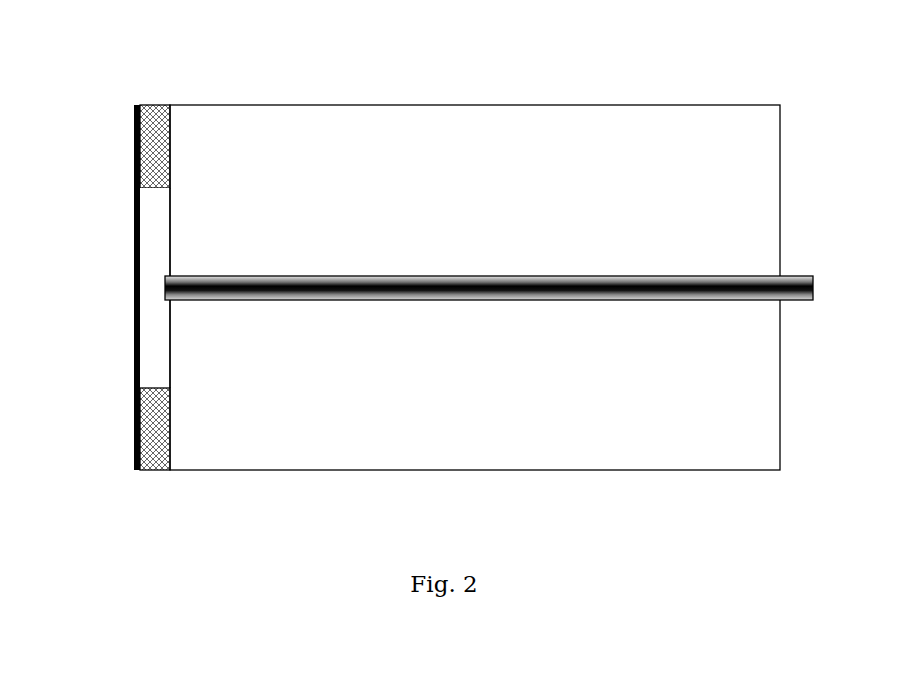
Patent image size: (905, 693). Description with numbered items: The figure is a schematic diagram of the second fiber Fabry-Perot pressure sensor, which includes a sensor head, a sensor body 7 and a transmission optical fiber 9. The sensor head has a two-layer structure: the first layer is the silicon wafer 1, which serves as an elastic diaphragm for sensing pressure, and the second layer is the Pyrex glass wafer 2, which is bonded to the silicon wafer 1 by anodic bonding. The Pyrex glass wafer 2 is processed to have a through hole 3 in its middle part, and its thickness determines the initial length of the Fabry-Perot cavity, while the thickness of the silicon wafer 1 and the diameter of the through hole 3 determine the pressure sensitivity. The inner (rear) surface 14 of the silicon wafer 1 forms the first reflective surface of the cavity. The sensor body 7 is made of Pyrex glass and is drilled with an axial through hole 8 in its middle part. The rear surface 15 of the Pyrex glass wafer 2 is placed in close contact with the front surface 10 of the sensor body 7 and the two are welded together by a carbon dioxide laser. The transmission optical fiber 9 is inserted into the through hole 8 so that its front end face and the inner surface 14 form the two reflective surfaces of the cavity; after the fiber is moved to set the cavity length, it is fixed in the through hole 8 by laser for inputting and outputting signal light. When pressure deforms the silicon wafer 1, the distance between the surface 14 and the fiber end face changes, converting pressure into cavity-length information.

The first silicon wafer 1 is at (130, 192).
The first Pyrex glass wafer 2 is at (158, 130).
The central through hole of the first Pyrex glass wafer 3 is at (152, 223).
The sensor body 7 is at (512, 268).
The through hole of the sensor body in central axial direction 8 is at (612, 281).
The transmission optical fiber 9 is at (708, 291).
The front surface of the sensor body 10 is at (173, 451).
The rear surface of the first silicon wafer 14 is at (167, 442).
The rear surface of the first Pyrex glass wafer 15 is at (138, 473).